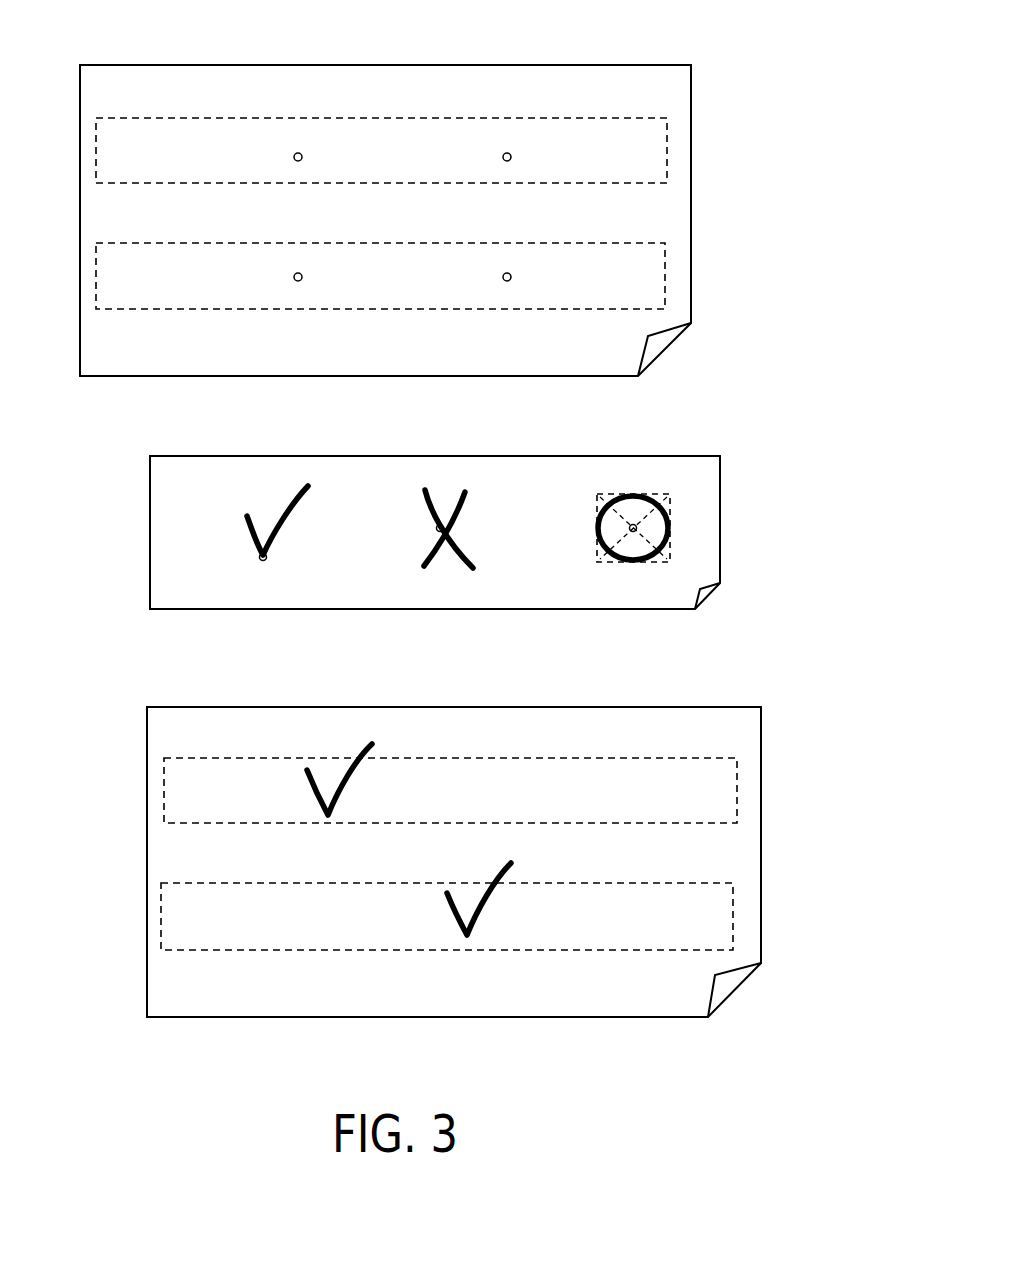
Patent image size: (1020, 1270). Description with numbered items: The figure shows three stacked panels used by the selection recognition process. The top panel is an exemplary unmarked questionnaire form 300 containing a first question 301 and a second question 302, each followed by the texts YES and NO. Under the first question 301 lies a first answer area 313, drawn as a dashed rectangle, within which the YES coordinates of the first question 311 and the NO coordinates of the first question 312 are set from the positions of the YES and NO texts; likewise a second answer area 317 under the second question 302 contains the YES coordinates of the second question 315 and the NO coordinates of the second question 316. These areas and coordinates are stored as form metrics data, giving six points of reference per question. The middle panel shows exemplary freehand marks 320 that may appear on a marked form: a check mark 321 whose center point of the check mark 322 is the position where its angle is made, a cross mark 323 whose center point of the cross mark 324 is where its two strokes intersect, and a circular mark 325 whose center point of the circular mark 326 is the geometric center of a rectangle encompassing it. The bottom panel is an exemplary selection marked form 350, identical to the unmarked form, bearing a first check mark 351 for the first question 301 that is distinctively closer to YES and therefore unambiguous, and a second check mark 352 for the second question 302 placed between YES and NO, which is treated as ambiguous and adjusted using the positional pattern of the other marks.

The unmarked questionnaire form 300 is at (170, 60).
The first question 301 is at (168, 109).
The second question 302 is at (168, 230).
The YES coordinates of the first question 311 is at (296, 156).
The NO coordinates of the first question 312 is at (509, 155).
The first answer area 313 is at (654, 163).
The YES coordinates of the second question 315 is at (296, 277).
The NO coordinates of the second question 316 is at (510, 276).
The second answer area 317 is at (648, 283).
The freehand marks 320 is at (145, 508).
The check mark 321 is at (245, 522).
The center point of the check mark 322 is at (260, 562).
The cross mark 323 is at (420, 504).
The center point of the cross mark 324 is at (437, 531).
The circular mark 325 is at (598, 517).
The center point of the circular mark 326 is at (630, 528).
The selection marked form 350 is at (125, 760).
The first check mark 351 is at (320, 810).
The second check mark 352 is at (457, 933).